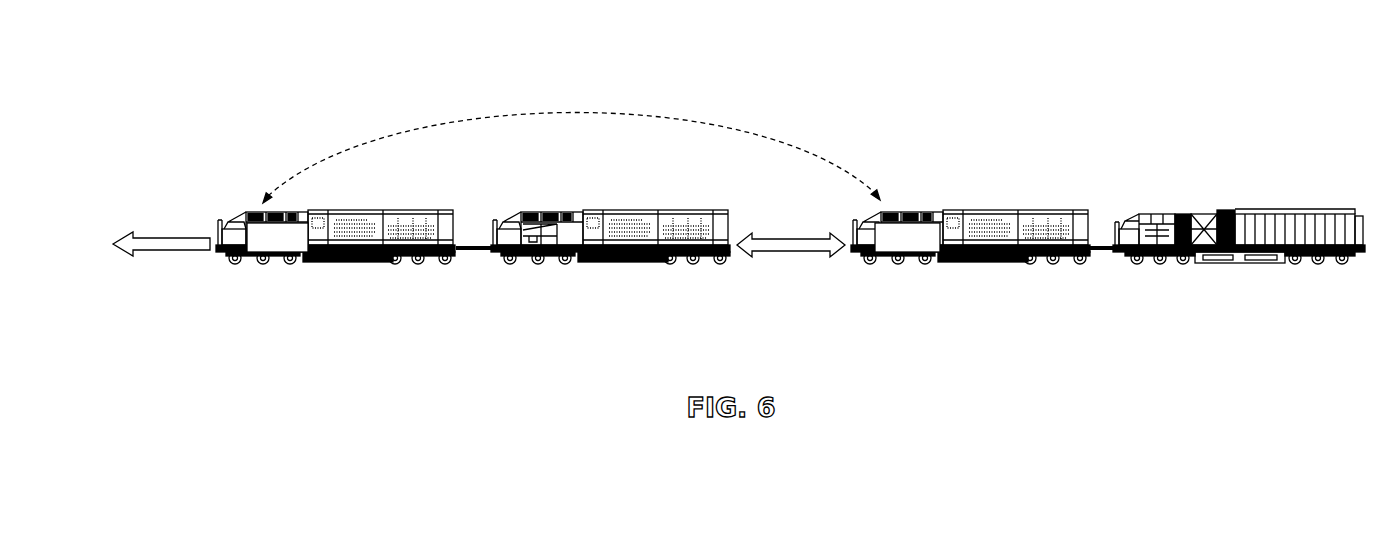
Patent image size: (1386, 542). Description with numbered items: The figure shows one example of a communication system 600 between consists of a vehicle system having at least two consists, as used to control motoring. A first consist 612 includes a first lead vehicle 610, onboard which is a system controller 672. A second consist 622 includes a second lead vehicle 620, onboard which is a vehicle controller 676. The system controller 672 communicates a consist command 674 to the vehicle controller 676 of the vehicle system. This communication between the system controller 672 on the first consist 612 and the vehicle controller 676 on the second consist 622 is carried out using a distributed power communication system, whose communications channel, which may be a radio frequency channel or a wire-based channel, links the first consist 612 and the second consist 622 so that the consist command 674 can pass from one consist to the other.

The communication system 600 is at (1125, 36).
The first lead vehicle 610 is at (350, 210).
The first consist 612 is at (280, 138).
The second lead vehicle 620 is at (982, 208).
The second consist 622 is at (1225, 140).
The system controller 672 is at (268, 237).
The consist command 674 is at (435, 128).
The vehicle controller 676 is at (905, 233).